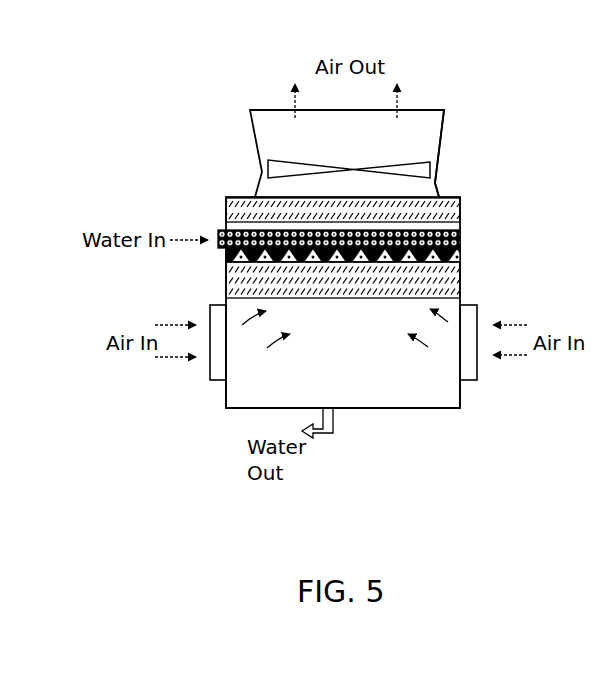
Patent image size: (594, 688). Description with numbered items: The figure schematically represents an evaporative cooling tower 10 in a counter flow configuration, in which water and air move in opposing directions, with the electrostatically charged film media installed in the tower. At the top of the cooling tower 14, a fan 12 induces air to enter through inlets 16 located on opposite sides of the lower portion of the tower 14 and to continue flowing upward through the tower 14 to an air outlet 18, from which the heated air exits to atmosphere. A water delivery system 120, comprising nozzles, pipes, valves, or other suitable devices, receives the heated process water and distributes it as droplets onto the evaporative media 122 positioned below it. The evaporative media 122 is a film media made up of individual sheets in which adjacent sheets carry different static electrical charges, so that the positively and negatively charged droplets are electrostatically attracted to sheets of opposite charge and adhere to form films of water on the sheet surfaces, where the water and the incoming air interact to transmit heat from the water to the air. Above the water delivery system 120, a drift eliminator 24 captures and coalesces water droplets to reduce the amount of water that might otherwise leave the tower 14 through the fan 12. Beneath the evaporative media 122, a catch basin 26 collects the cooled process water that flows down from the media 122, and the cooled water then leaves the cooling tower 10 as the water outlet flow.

The evaporative cooling tower 10 is at (140, 137).
The fan 12 is at (412, 166).
The cooling tower 14 is at (441, 168).
The inlet 16 is at (218, 381).
The air outlet 18 is at (265, 118).
The drift eliminator 24 is at (226, 213).
The catch basin 26 is at (364, 403).
The water delivery system 120 is at (465, 243).
The evaporative media 122 is at (455, 280).